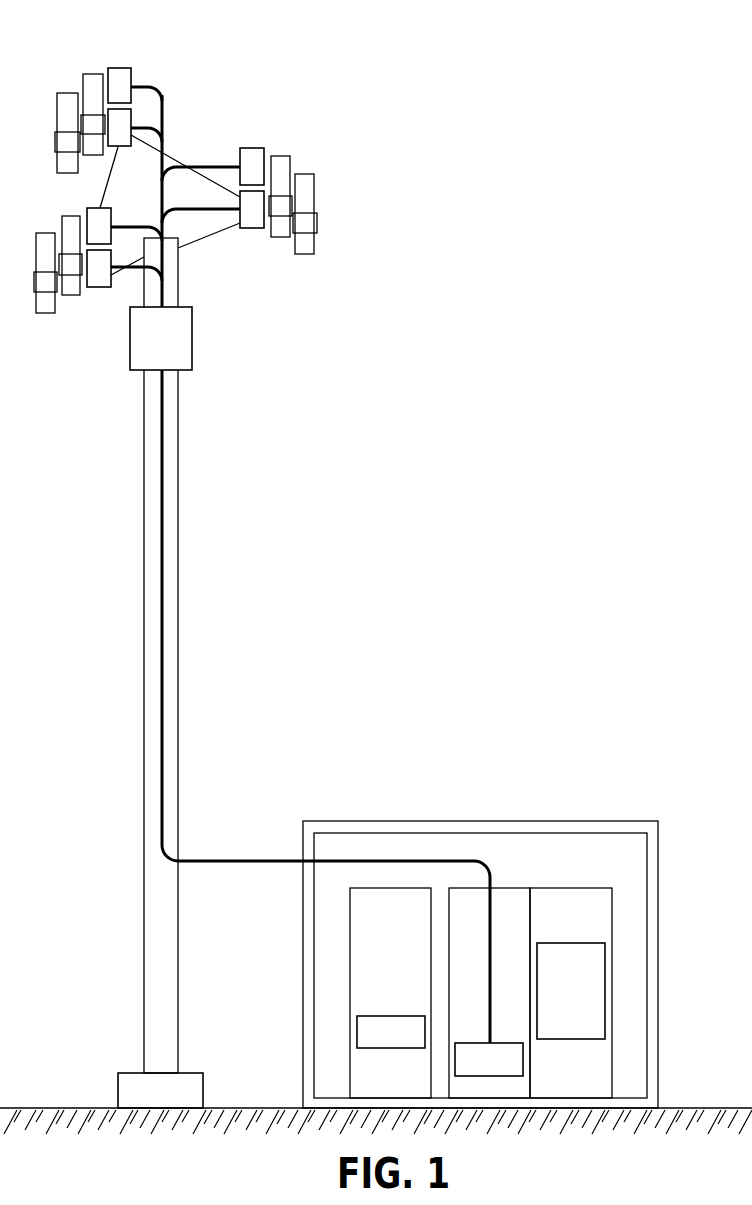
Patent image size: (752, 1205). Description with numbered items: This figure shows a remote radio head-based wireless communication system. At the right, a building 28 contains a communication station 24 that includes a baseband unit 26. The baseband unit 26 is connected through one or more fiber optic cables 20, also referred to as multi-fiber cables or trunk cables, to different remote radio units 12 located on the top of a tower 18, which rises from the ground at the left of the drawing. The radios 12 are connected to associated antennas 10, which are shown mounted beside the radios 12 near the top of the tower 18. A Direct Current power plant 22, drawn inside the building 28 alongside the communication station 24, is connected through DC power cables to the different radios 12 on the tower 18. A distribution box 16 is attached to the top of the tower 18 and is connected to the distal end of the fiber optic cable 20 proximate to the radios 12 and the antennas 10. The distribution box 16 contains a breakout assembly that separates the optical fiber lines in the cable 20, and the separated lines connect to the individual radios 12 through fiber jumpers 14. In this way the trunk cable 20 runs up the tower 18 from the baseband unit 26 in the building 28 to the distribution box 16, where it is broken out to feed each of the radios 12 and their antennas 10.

The antenna 10 is at (92, 74).
The remote radio unit 12 is at (118, 68).
The fiber jumper 14 is at (209, 167).
The distribution box 16 is at (192, 339).
The tower 18 is at (143, 723).
The fiber optic cable 20 is at (240, 861).
The DC power plant 22 is at (391, 1016).
The communication station 24 is at (507, 888).
The baseband unit 26 is at (471, 1043).
The building 28 is at (482, 821).